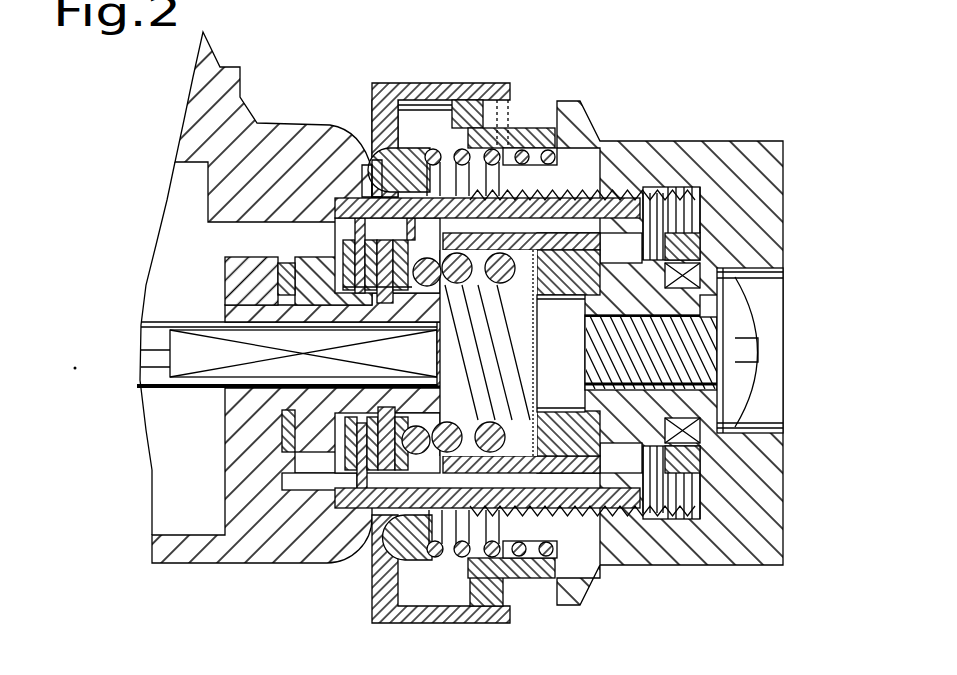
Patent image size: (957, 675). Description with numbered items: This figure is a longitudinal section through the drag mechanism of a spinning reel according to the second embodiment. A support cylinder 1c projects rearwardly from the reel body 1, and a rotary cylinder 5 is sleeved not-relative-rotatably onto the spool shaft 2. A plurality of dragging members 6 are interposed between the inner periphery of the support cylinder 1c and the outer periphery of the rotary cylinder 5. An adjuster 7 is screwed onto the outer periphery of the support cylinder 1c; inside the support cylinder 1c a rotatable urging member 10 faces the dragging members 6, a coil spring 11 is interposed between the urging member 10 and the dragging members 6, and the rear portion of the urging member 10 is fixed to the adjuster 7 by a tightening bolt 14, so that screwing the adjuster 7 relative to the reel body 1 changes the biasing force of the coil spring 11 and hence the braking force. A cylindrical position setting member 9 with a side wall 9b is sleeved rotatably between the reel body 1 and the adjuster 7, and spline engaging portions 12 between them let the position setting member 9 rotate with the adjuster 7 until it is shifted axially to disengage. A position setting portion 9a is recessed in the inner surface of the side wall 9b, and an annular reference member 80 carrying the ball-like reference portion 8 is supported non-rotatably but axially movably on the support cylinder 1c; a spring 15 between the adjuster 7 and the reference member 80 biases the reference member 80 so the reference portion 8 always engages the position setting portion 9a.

The reel body 1 is at (247, 100).
The support cylinder 1c is at (587, 493).
The spool shaft 2 is at (147, 390).
The rotary cylinder 5 is at (322, 438).
The dragging members 6 is at (425, 432).
The adjuster 7 is at (730, 153).
The reference portion 8 is at (375, 163).
The position setting member 9 is at (447, 100).
The position setting portion 9a is at (385, 165).
The side wall 9b is at (370, 110).
The reference member 80 is at (420, 152).
The urging member 10 is at (700, 307).
The coil spring 11 is at (505, 280).
The engaging portions 12 is at (477, 98).
The tightening bolt 14 is at (740, 320).
The spring 15 is at (520, 147).